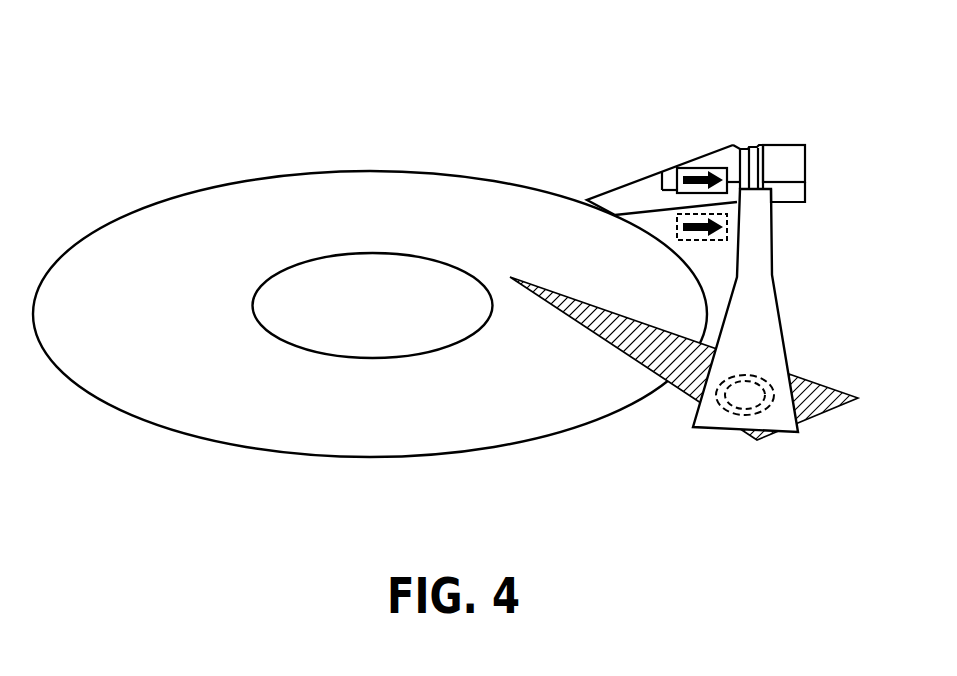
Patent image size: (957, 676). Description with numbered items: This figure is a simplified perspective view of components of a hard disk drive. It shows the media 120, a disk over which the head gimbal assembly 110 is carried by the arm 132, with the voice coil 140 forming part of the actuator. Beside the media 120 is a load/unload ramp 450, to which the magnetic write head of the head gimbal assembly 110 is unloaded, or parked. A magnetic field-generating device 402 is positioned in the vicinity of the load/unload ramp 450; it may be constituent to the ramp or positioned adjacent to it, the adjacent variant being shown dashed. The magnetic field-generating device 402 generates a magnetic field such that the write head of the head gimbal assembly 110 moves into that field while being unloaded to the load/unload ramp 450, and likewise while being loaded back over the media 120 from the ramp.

The head gimbal assembly 110 is at (755, 158).
The media 120 is at (138, 310).
The arm 132 is at (763, 300).
The voice coil 140 is at (782, 420).
The magnetic field-generating device 402 is at (672, 230).
The load/unload ramp 450 is at (793, 164).